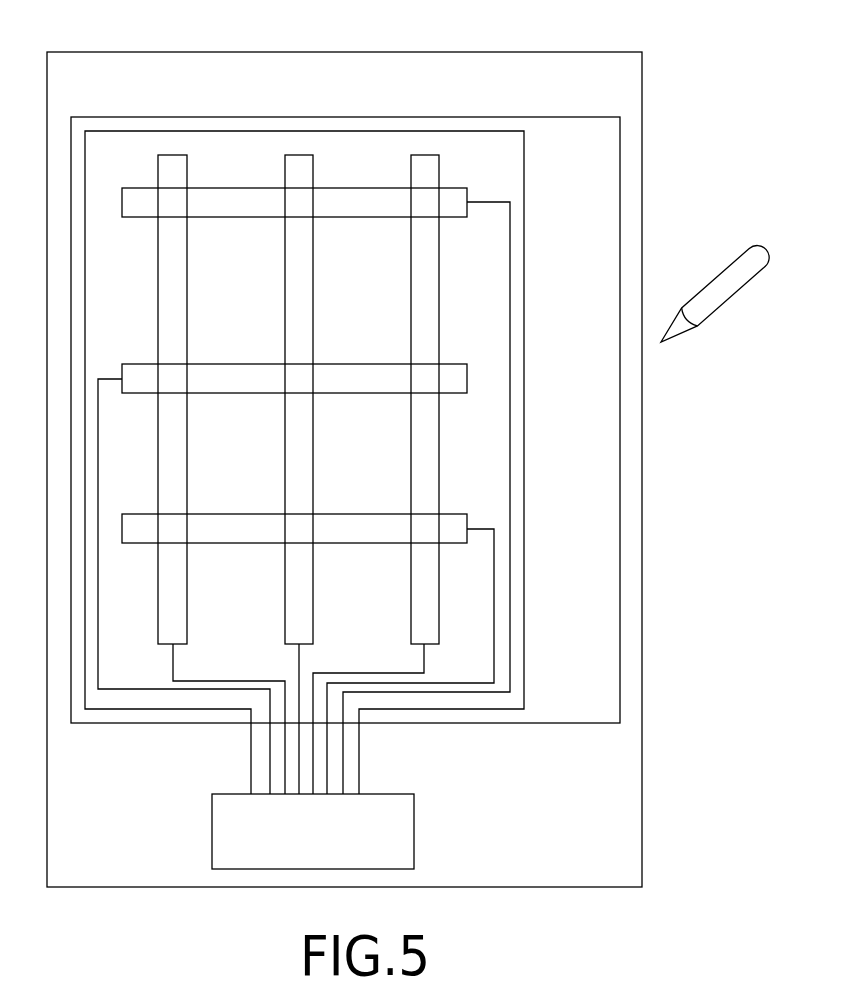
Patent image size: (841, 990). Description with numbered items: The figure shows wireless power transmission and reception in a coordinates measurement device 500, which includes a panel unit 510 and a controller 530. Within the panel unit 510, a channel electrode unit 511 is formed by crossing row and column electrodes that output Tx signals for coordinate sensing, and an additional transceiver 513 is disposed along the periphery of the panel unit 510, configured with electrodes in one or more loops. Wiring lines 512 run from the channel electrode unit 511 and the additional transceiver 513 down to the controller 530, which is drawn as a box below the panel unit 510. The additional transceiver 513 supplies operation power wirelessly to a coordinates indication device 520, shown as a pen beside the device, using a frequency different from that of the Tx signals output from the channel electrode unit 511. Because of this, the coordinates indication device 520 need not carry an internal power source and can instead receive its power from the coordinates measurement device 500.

The coordinates measurement device 500 is at (388, 52).
The panel unit 510 is at (389, 115).
The channel electrode unit 511 is at (235, 188).
The wiring lines 512 is at (157, 690).
The additional transceiver 513 is at (524, 175).
The coordinates indication device 520 is at (710, 272).
The controller 530 is at (414, 830).